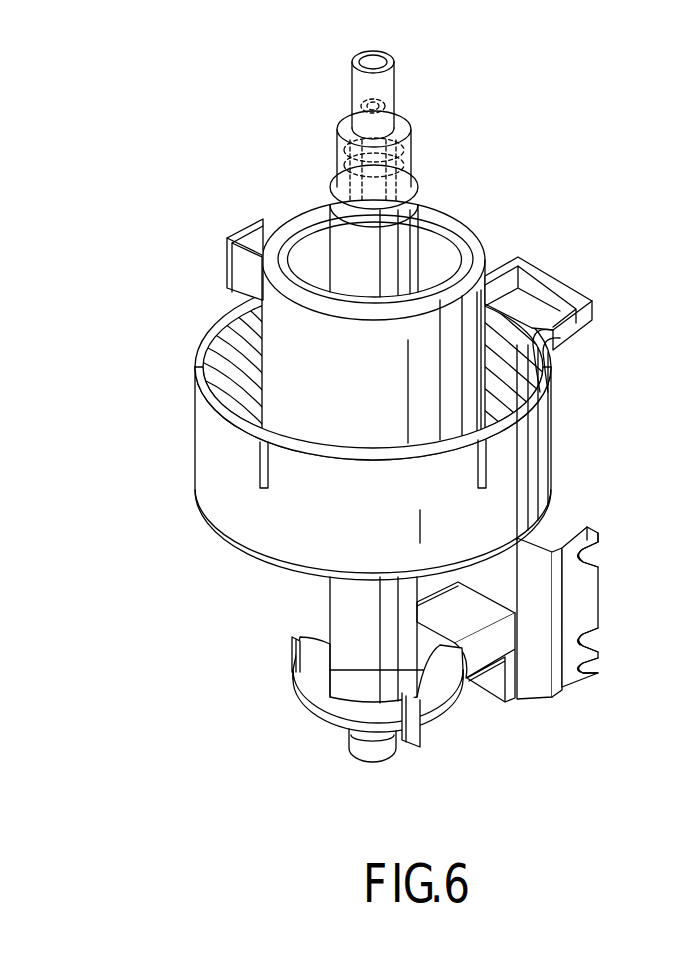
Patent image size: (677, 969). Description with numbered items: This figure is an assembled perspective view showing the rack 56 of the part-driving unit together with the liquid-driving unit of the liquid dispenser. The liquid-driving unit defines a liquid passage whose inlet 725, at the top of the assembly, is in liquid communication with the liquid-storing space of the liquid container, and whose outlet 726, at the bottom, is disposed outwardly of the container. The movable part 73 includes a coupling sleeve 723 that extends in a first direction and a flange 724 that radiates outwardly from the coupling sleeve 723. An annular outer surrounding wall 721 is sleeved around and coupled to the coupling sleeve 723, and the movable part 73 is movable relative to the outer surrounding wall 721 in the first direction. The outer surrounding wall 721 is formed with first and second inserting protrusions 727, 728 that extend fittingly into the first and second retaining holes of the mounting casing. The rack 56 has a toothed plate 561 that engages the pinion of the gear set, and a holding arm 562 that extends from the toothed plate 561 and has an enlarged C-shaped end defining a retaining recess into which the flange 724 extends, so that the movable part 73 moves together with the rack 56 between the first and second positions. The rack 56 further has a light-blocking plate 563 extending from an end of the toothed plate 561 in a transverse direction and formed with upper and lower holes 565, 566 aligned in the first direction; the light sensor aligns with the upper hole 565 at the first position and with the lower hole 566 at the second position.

The rack 56 is at (578, 700).
The toothed plate 561 is at (535, 665).
The holding arm 562 is at (465, 614).
The light-blocking plate 563 is at (583, 603).
The upper hole 565 is at (590, 558).
The lower hole 566 is at (590, 643).
The movable part 73 is at (345, 660).
The annular outer surrounding wall 721 is at (212, 448).
The coupling sleeve 723 is at (338, 600).
The flange 724 is at (308, 687).
The inlet 725 is at (360, 60).
The outlet 726 is at (373, 760).
The first inserting protrusion 727 is at (248, 225).
The second inserting protrusion 728 is at (560, 275).